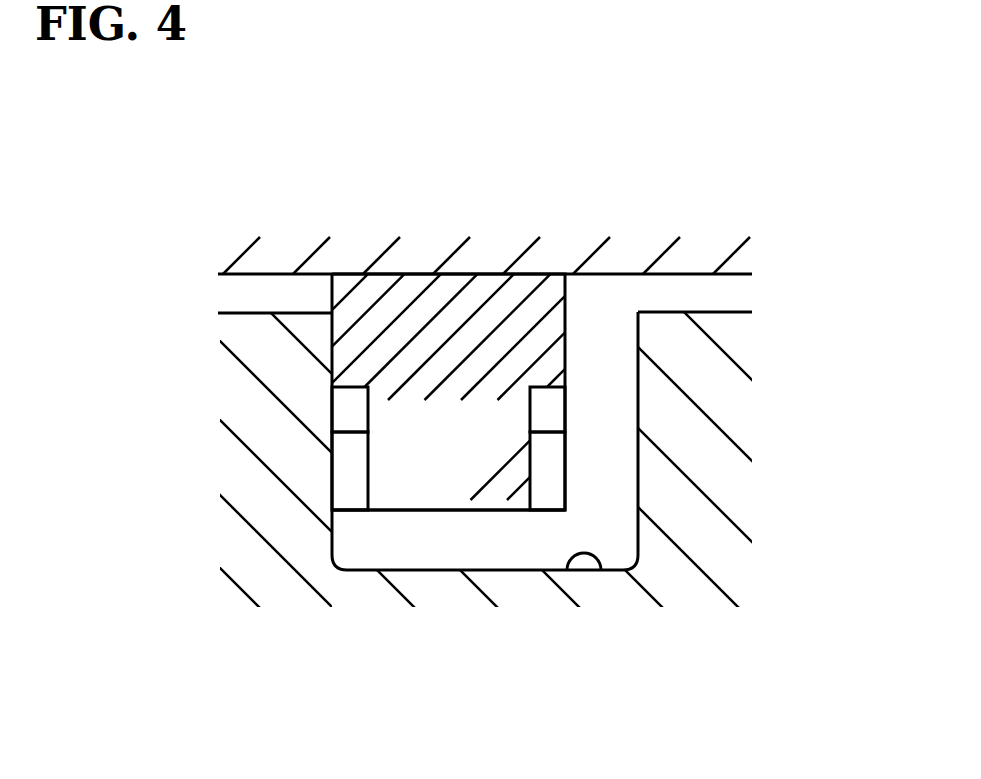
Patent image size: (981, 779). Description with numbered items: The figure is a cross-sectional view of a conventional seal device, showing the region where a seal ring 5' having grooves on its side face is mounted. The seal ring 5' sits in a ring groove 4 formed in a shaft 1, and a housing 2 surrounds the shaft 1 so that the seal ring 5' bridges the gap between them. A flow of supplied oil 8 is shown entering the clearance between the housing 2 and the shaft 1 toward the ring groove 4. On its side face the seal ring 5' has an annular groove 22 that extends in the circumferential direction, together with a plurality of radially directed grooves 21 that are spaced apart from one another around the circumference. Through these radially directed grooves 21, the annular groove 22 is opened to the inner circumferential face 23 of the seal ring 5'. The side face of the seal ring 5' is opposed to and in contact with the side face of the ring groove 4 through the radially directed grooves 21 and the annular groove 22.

The shaft 1 is at (800, 451).
The housing 2 is at (625, 257).
The ring groove 4 is at (598, 566).
The seal ring 5' is at (593, 305).
The flow of supplied oil 8 is at (733, 293).
The radially directed grooves 21 is at (350, 473).
The annular groove 22 is at (350, 413).
The inner circumferential face 23 is at (433, 510).